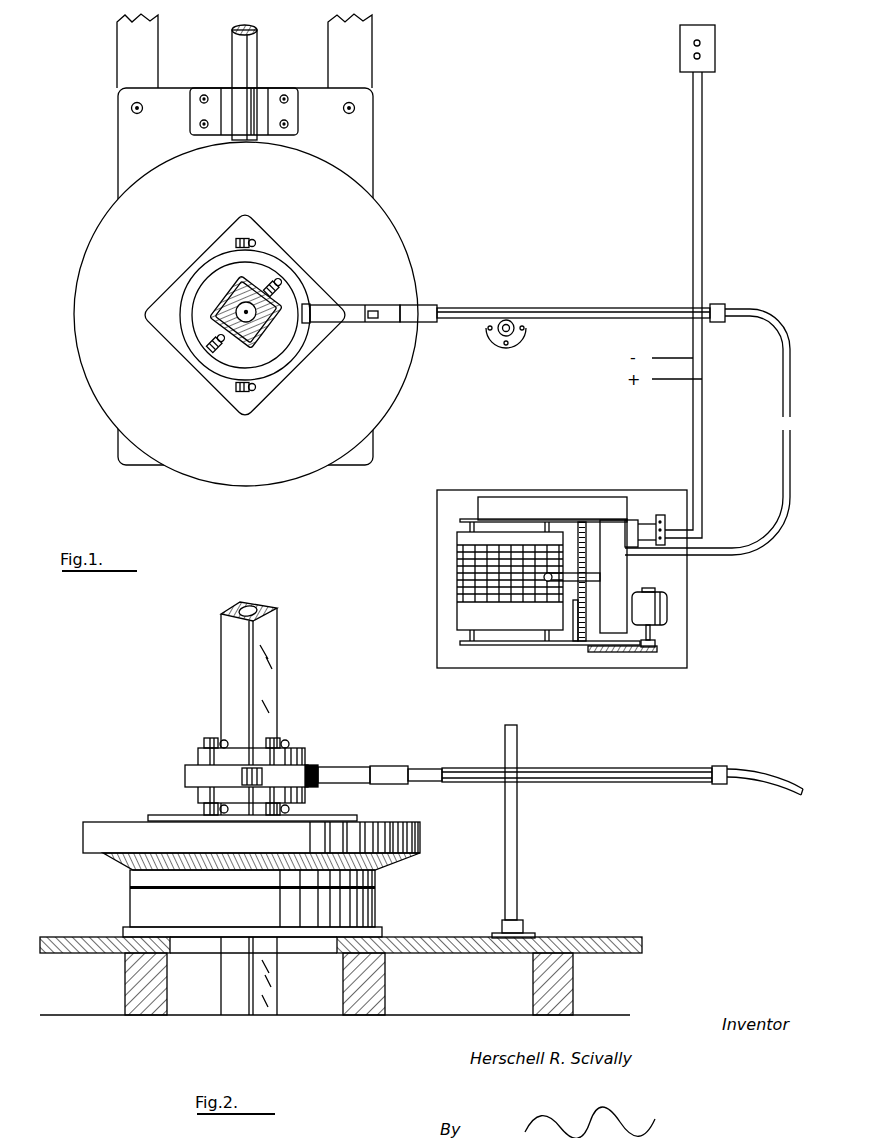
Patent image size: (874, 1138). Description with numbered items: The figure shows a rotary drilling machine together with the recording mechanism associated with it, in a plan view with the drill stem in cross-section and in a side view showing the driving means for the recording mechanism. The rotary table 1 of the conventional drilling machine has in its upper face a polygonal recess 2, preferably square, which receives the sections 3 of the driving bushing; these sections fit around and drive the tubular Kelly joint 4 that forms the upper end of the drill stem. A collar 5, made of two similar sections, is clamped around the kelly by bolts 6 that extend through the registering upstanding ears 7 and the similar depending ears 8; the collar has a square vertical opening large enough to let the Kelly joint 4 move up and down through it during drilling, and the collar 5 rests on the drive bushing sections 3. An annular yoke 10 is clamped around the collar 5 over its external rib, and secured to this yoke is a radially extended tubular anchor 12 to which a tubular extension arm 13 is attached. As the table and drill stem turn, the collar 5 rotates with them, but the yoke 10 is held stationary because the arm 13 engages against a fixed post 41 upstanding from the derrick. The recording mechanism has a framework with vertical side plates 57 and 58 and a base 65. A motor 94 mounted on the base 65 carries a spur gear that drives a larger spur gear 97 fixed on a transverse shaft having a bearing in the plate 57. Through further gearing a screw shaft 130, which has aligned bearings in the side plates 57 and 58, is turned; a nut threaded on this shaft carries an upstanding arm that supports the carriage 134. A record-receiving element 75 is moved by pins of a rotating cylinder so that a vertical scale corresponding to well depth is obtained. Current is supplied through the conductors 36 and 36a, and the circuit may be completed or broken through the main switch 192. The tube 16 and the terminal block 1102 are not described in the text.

In FIG. 1, the rotary table 1 is at (407, 263).
In FIG. 2, the rotary table 1 is at (97, 819).
In FIG. 1, the polygonal recess 2 is at (400, 335).
In FIG. 1, the driving bushing section 3 is at (247, 218).
In FIG. 2, the driving bushing section 3 is at (361, 820).
In FIG. 1, the tubular Kelly joint 4 is at (258, 283).
In FIG. 2, the tubular Kelly joint 4 is at (221, 638).
In FIG. 1, the collar 5 is at (288, 302).
In FIG. 2, the collar 5 is at (307, 752).
In FIG. 2, the bolt 6 is at (288, 744).
In FIG. 2, the upstanding ear 7 is at (213, 737).
In FIG. 2, the depending ear 8 is at (208, 812).
In FIG. 1, the annular yoke 10 is at (276, 372).
In FIG. 2, the annular yoke 10 is at (188, 773).
In FIG. 1, the tubular anchor 12 is at (317, 323).
In FIG. 2, the tubular anchor 12 is at (365, 784).
In FIG. 2, the tubular extension arm 13 is at (474, 768).
In FIG. 1, the flexible tube 16 is at (789, 391).
In FIG. 2, the flexible tube 16 is at (782, 764).
In FIG. 1, the conductor 36 is at (697, 414).
In FIG. 1, the conductor 36a is at (705, 250).
In FIG. 1, the fixed post 41 is at (528, 336).
In FIG. 2, the fixed post 41 is at (519, 828).
In FIG. 1, the vertical side plate 57 is at (522, 646).
In FIG. 1, the vertical side plate 58 is at (532, 516).
In FIG. 1, the base 65 is at (466, 482).
In FIG. 1, the record-receiving element 75 is at (458, 593).
In FIG. 1, the motor 94 is at (668, 616).
In FIG. 1, the spur gear 97 is at (618, 653).
In FIG. 1, the screw shaft 130 is at (577, 643).
In FIG. 1, the carriage 134 is at (587, 565).
In FIG. 1, the main switch 192 is at (721, 48).
In FIG. 1, the terminal block 1102 is at (629, 525).